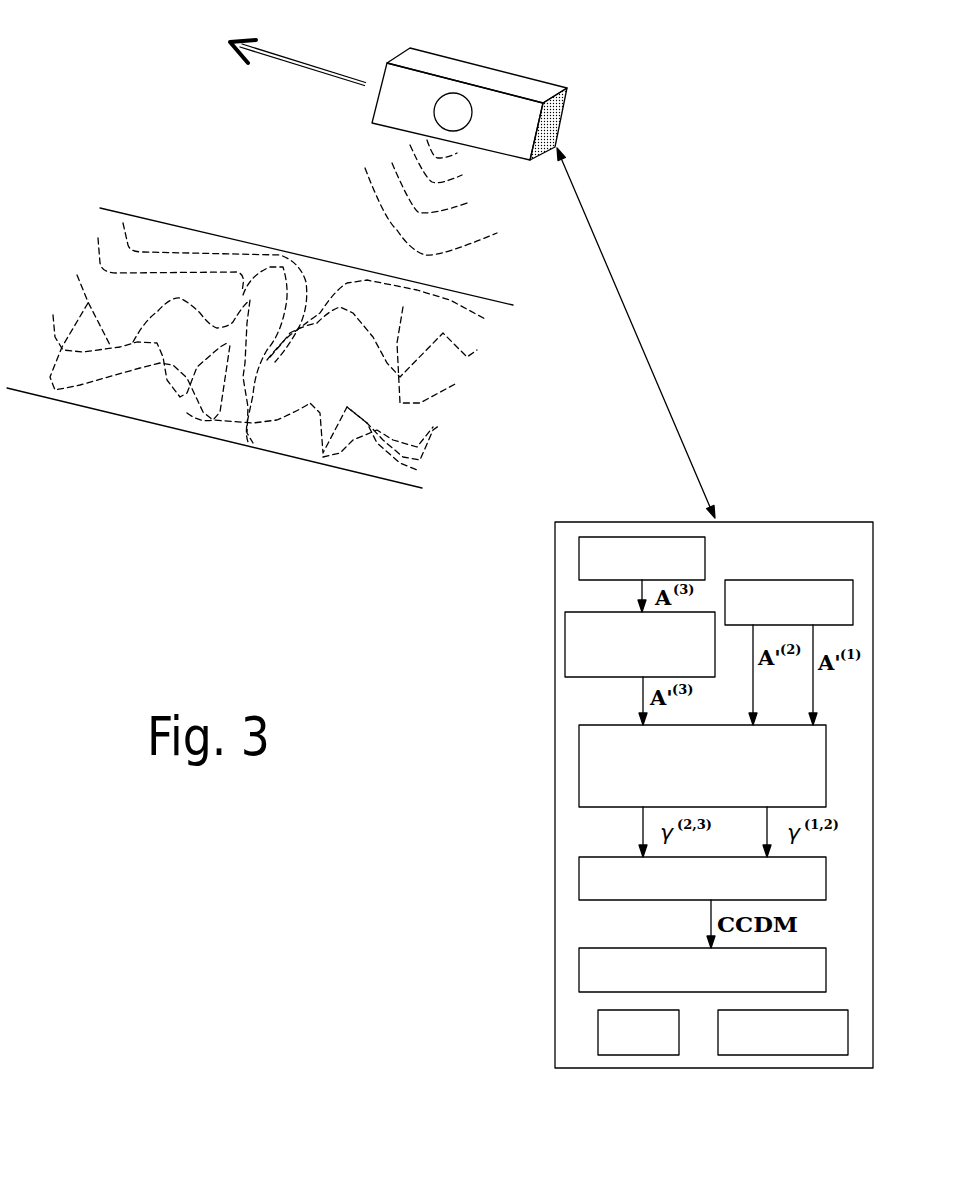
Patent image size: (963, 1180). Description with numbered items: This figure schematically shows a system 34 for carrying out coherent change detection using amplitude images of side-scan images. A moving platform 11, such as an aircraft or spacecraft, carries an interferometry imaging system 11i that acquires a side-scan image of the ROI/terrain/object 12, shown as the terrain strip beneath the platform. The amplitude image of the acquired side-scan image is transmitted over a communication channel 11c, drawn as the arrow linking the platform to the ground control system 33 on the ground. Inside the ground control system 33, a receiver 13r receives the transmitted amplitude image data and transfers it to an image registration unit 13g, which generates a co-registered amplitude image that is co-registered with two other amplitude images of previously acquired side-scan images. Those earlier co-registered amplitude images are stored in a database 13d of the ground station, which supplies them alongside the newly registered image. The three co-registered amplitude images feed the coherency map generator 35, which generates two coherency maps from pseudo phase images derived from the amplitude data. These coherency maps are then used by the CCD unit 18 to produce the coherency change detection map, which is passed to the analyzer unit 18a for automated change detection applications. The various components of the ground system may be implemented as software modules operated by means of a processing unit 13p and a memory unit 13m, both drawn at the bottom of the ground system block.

The moving platform 11 is at (517, 87).
The interferometry imaging system 11i is at (433, 108).
The communication channel 11c is at (585, 212).
The ROI/terrain/object 12 is at (163, 408).
The system 34 is at (753, 277).
The ground control system 33 is at (772, 522).
The receiver 13r is at (580, 553).
The image registration unit 13g is at (567, 667).
The database 13d is at (840, 580).
The coherency map generator 35 is at (580, 787).
The CCD unit 18 is at (827, 878).
The analyzer unit 18a is at (827, 970).
The processing unit 13p is at (598, 1033).
The memory unit 13m is at (850, 1032).